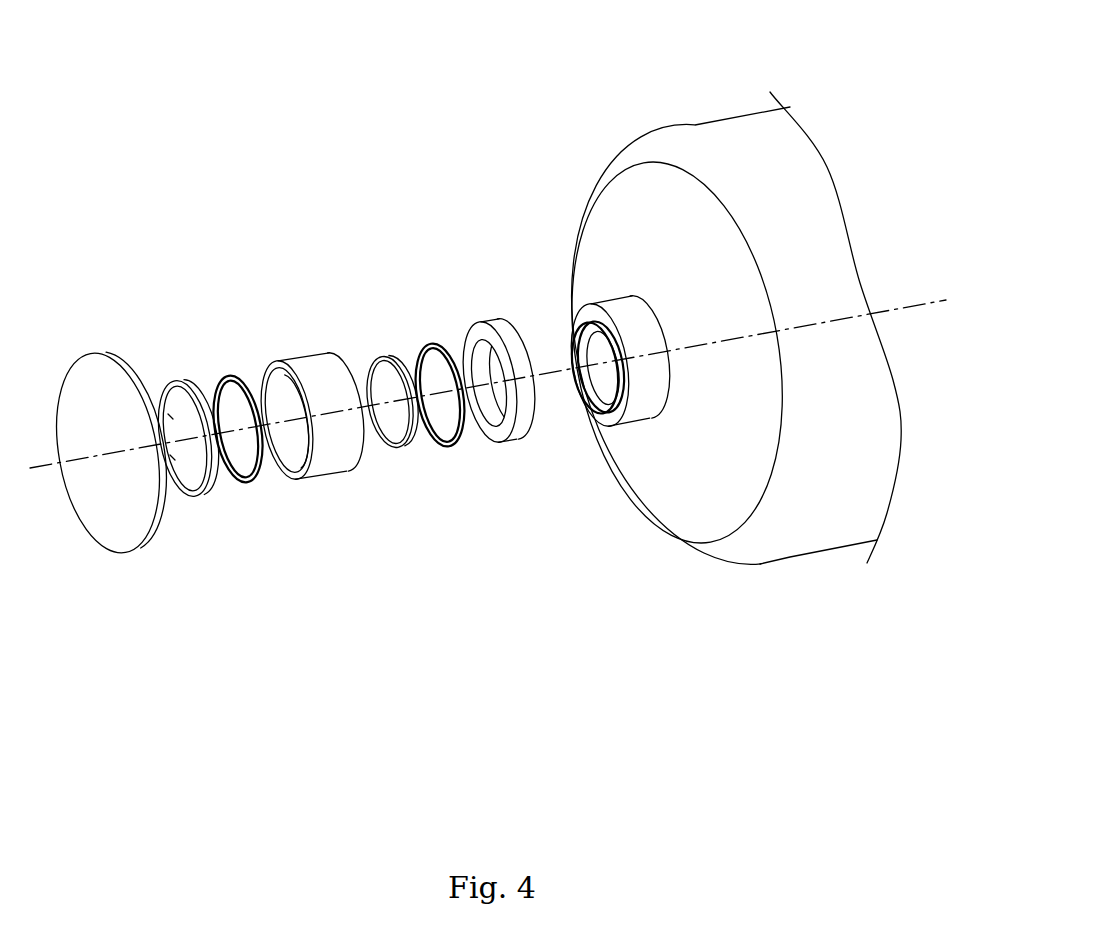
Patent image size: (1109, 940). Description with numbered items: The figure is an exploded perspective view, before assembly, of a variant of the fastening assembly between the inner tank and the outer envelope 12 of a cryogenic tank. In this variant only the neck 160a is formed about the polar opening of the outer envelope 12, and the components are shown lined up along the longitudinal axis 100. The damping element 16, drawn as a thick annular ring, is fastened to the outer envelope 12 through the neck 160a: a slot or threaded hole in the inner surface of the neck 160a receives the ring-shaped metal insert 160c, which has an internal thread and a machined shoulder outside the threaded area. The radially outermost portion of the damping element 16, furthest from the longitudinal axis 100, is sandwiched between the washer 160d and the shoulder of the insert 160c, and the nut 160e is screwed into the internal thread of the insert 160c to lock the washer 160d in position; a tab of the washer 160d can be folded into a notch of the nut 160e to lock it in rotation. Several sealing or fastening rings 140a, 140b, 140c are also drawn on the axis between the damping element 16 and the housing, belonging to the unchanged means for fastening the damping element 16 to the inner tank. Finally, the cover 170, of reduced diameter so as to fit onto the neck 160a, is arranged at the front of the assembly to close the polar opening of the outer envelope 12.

The outer envelope 12 is at (695, 128).
The damping element 16 is at (485, 322).
The longitudinal axis 100 is at (926, 300).
The sealing ring 140a is at (593, 395).
The sealing ring 140b is at (447, 443).
The sealing ring 140c is at (383, 353).
The neck 160a is at (599, 312).
The metal insert 160c is at (332, 462).
The washer 160d is at (218, 380).
The nut 160e is at (197, 498).
The cover 170 is at (90, 413).